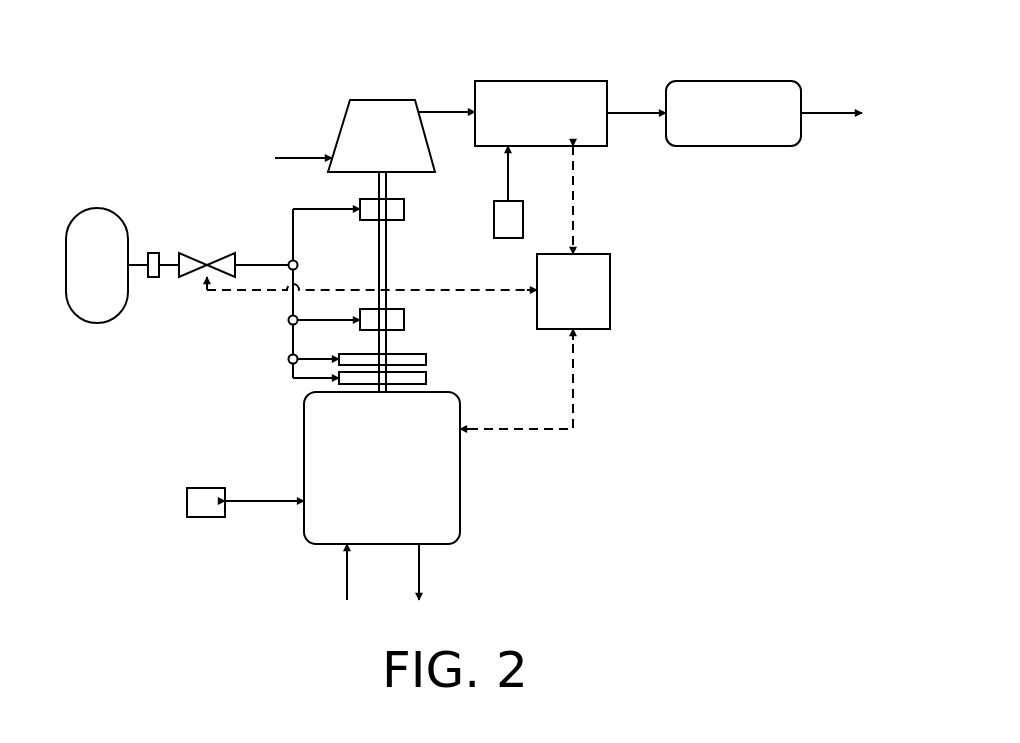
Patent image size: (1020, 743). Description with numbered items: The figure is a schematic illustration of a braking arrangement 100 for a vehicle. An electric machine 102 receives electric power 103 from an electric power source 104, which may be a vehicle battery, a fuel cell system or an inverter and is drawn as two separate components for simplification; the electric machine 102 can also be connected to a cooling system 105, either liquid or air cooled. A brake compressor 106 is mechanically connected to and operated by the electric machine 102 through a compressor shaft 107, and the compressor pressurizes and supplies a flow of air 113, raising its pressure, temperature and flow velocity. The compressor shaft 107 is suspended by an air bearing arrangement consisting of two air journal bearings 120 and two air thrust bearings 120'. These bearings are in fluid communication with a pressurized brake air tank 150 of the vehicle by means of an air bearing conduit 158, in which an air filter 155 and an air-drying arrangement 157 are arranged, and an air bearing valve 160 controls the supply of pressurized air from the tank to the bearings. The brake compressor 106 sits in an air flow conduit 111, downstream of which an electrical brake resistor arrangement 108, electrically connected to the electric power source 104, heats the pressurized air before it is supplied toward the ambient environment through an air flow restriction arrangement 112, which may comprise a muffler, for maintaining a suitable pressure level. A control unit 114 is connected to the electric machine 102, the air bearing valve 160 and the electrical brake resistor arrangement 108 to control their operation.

The braking arrangement 100 is at (203, 60).
The electric machine 102 is at (460, 485).
The electric power 103 is at (262, 500).
The electric power source 104 is at (523, 221).
The cooling system 105 is at (345, 571).
The brake compressor 106 is at (380, 100).
The compressor shaft 107 is at (386, 260).
The electrical brake resistor arrangement 108 is at (542, 81).
The air flow conduit 111 is at (633, 110).
The air flow restriction arrangement 112 is at (735, 81).
The flow of air 113 is at (293, 158).
The control unit 114 is at (610, 292).
The air journal bearings 120 is at (395, 263).
The air thrust bearings 120' is at (411, 356).
The pressurized brake air tank 150 is at (96, 208).
The air filter 155 is at (138, 268).
The air-drying arrangement 157 is at (153, 277).
The air bearing conduit 158 is at (252, 262).
The air bearing valve 160 is at (207, 262).